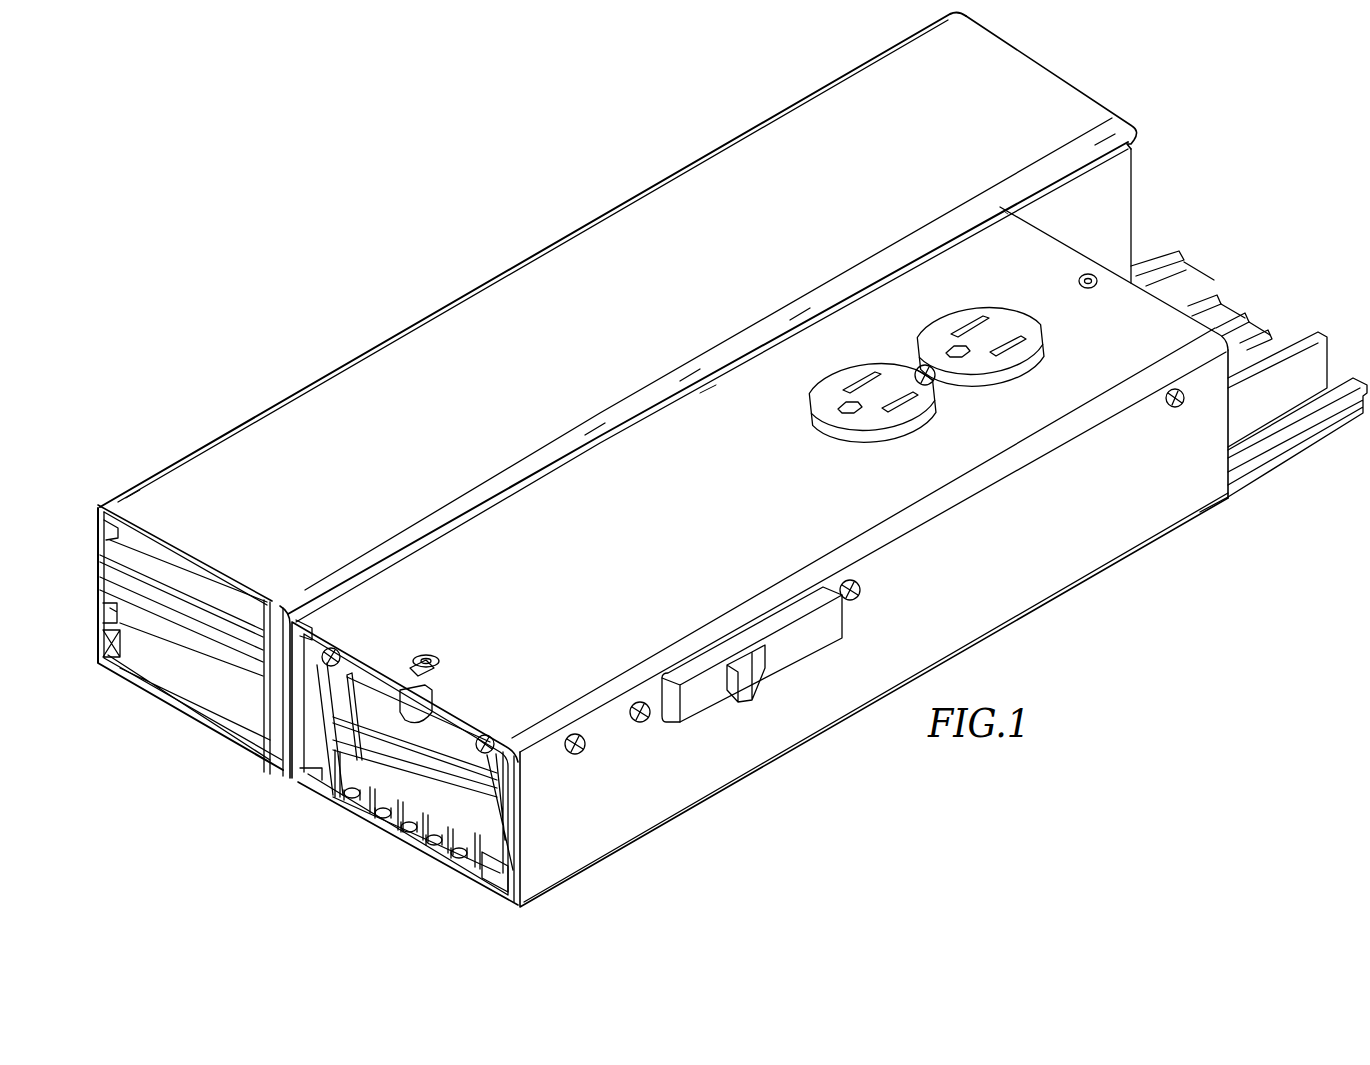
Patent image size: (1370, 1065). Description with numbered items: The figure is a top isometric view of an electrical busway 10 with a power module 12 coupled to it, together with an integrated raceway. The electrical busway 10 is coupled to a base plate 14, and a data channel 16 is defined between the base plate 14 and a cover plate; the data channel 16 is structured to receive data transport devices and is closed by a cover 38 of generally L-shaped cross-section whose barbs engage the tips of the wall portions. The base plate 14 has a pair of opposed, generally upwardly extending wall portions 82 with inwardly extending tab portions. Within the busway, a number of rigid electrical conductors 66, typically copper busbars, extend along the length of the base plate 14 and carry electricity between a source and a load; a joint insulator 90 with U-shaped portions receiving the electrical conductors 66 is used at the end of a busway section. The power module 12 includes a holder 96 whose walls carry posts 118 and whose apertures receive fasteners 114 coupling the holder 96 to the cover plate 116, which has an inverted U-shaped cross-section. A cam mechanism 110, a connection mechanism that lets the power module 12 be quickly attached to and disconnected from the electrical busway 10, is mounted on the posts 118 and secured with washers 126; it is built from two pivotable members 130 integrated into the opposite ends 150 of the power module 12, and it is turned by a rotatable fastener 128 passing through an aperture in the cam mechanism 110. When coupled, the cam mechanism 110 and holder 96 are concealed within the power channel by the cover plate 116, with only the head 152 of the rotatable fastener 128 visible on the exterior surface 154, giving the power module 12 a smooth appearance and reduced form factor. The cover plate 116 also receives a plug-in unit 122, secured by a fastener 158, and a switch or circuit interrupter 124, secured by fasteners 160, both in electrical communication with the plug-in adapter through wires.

The electrical busway 10 is at (356, 840).
The power module 12 is at (870, 557).
The base plate 14 is at (188, 718).
The data channel 16 is at (158, 722).
The cover 38 is at (392, 485).
The electrical conductors 66 is at (345, 796).
The wall portions 82 is at (316, 771).
The joint insulator 90 is at (343, 812).
The holder 96 is at (446, 735).
The cam mechanism 110 is at (380, 714).
The fasteners 114 is at (575, 755).
The cover plate 116 is at (723, 530).
The posts 118 is at (333, 647).
The plug-in unit 122 is at (950, 300).
The switch or circuit interrupter 124 is at (792, 640).
The washers 126 is at (486, 734).
The rotatable fastener 128 is at (420, 656).
The pivotable members 130 is at (372, 672).
The opposite ends 150 is at (314, 620).
The head 152 is at (430, 652).
The exterior surface 154 is at (710, 397).
The fastener 158 is at (918, 368).
The fasteners 160 is at (640, 722).